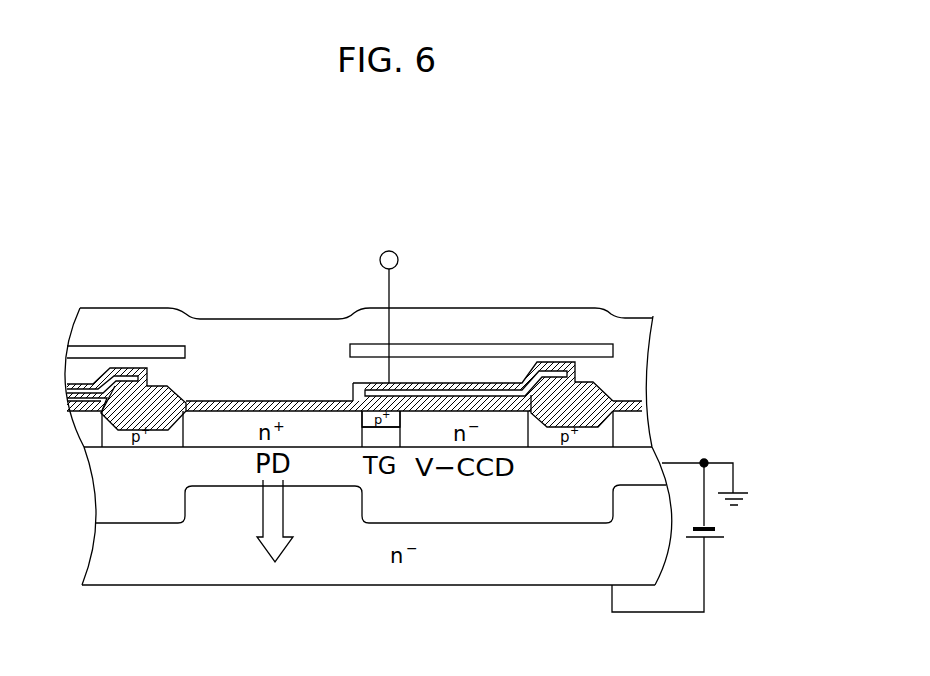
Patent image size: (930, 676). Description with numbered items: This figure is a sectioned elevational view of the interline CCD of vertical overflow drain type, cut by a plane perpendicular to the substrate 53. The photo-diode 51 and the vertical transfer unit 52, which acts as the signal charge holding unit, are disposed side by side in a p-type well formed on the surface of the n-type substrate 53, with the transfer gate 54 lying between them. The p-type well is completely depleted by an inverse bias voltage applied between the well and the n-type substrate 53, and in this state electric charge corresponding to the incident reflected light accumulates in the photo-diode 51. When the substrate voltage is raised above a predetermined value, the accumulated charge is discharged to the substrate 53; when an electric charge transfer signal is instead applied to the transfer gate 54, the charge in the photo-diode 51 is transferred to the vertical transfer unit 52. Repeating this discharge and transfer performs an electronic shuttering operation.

The photo-diode 51 is at (217, 472).
The vertical transfer unit 52 is at (507, 502).
The substrate 53 is at (367, 563).
The transfer gate 54 is at (378, 438).